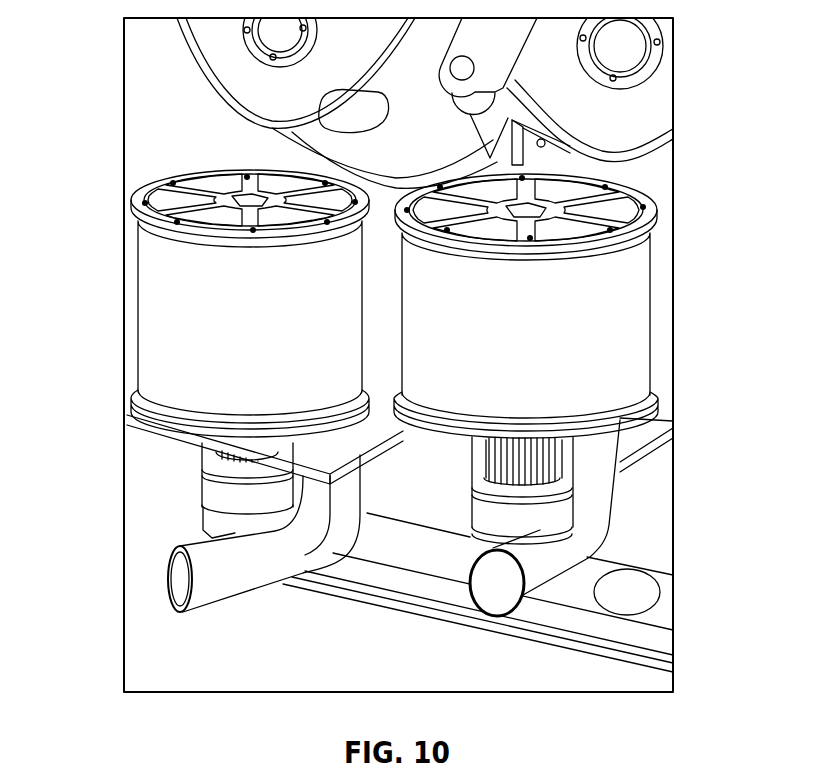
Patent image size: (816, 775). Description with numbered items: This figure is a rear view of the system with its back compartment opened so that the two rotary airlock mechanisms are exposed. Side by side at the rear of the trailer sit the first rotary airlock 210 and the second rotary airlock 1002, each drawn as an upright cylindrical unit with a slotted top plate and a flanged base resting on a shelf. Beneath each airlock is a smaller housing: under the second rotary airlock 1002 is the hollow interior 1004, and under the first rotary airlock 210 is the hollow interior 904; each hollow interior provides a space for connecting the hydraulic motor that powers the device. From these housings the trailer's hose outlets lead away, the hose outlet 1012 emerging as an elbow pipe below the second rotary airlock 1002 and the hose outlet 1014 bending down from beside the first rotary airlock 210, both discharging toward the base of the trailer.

The second rotary airlock 1002 is at (170, 318).
The first rotary airlock 210 is at (613, 307).
The hollow interior 1004 is at (202, 487).
The hollow interior 904 is at (558, 512).
The hose outlet 1012 is at (192, 580).
The hose outlet 1014 is at (590, 528).